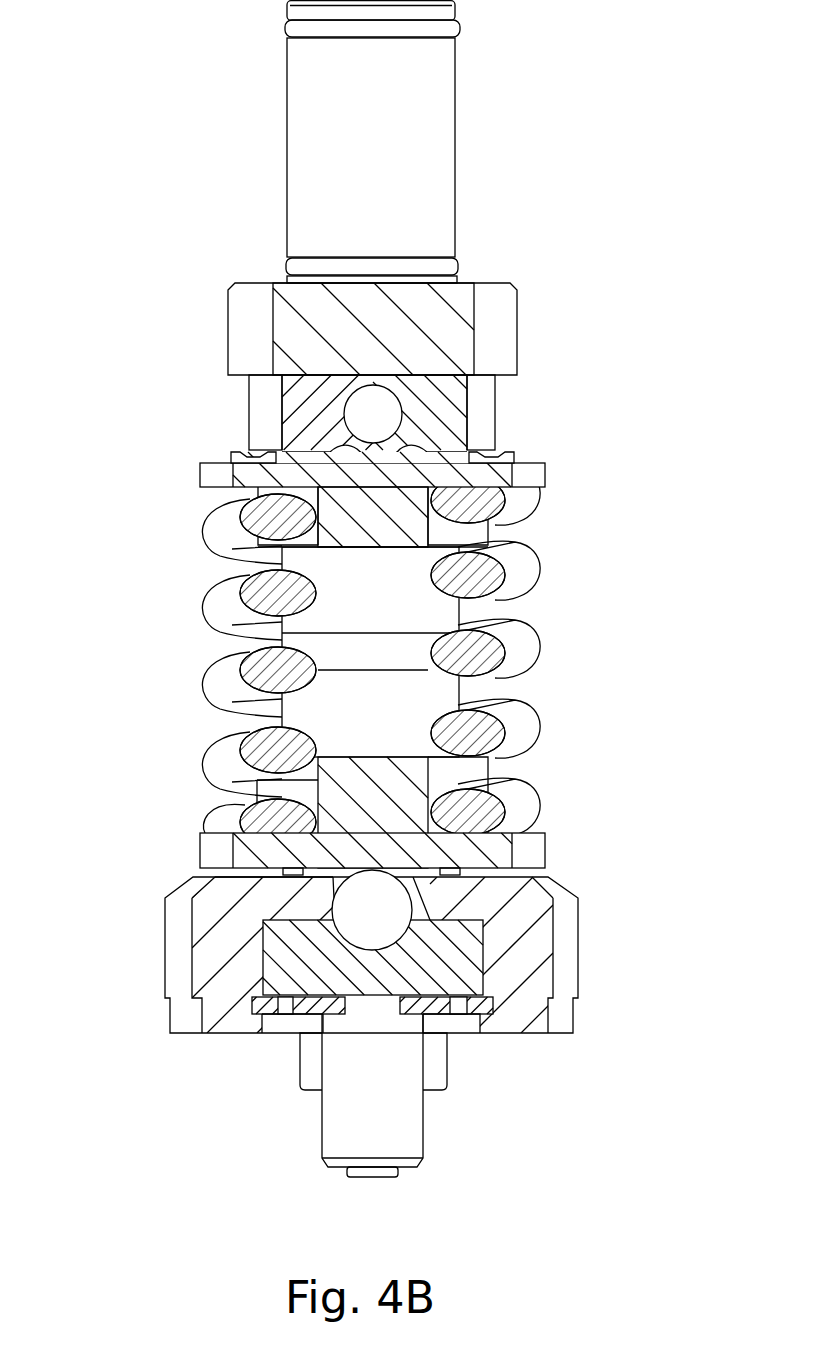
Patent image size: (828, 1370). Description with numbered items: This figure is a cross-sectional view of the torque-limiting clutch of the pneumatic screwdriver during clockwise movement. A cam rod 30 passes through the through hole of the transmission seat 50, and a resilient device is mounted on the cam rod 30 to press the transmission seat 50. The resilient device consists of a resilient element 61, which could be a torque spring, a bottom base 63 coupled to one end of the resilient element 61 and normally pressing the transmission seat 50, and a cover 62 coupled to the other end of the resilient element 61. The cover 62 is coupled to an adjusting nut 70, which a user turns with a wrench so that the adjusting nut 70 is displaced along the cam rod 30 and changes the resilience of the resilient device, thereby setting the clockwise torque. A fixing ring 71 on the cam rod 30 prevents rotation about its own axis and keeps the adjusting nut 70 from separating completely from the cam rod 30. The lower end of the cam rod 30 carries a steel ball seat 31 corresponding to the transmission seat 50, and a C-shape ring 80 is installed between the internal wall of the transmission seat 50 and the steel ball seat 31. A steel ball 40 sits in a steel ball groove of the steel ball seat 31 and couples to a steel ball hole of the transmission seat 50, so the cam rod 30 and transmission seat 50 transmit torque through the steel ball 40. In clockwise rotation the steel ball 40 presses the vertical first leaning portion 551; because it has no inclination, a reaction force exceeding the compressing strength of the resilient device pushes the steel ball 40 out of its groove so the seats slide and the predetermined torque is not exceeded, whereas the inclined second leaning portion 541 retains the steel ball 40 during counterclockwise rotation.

The cam rod 30 is at (440, 158).
The fixing ring 71 is at (508, 335).
The adjusting nut 70 is at (487, 417).
The cover 62 is at (533, 473).
The resilient element 61 is at (530, 567).
The bottom base 63 is at (535, 853).
The second leaning portion 541 is at (427, 890).
The transmission seat 50 is at (570, 933).
The steel ball seat 31 is at (467, 973).
The C-shape ring 80 is at (493, 1007).
The first leaning portion 551 is at (333, 880).
The steel ball 40 is at (347, 910).